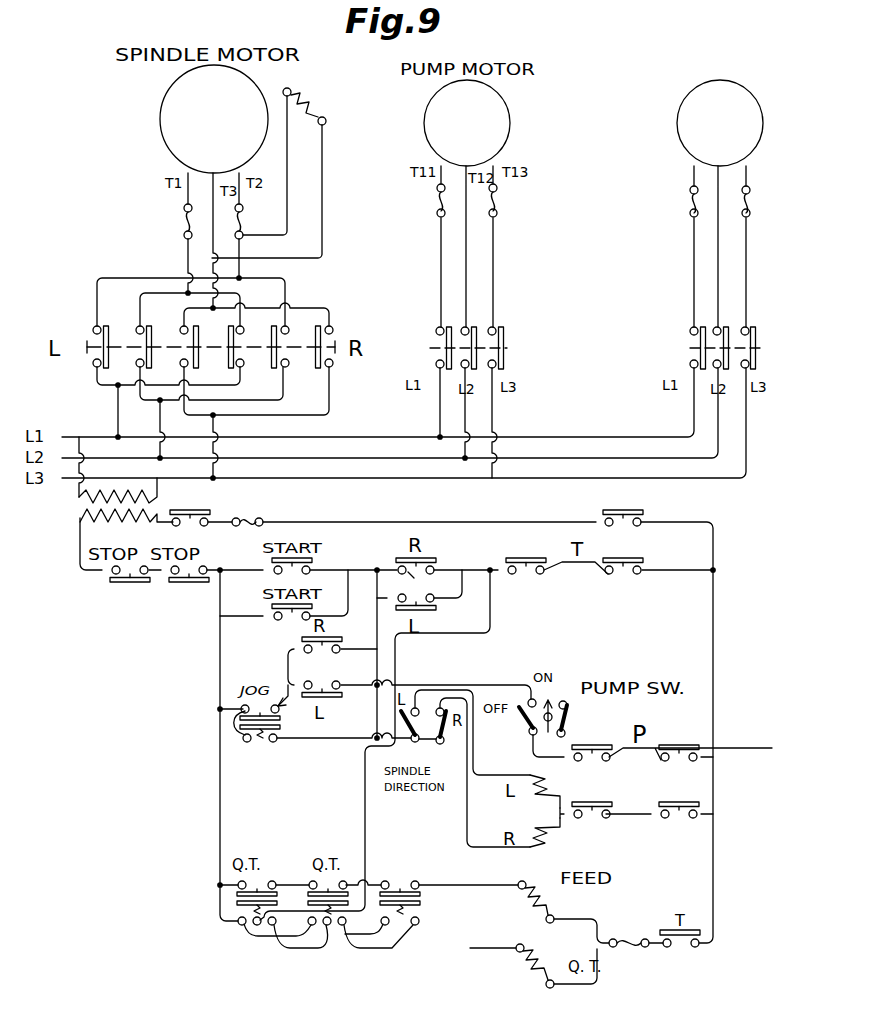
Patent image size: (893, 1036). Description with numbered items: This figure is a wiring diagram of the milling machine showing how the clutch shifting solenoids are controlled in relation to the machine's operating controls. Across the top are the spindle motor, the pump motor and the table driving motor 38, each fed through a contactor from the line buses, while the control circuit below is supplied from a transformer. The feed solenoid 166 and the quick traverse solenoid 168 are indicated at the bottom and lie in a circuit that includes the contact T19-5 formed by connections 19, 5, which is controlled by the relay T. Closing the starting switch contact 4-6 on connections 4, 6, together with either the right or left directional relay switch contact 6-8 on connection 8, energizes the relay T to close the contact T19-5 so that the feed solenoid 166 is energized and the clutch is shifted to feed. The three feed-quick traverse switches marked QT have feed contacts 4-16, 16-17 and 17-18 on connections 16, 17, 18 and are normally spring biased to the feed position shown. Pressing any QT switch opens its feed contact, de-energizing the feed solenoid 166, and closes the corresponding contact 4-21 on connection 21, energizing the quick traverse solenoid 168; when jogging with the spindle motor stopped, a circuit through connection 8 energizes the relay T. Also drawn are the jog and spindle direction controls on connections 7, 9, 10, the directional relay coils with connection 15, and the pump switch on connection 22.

The table driving motor 38 is at (712, 193).
The feed solenoid 166 is at (524, 905).
The quick traverse solenoid 168 is at (524, 973).
The control connection 4 is at (292, 747).
The control connection 5 is at (677, 745).
The control connection 6 is at (404, 658).
The control wire 7 is at (286, 669).
The control connection 8 is at (379, 735).
The control wire 9 is at (487, 749).
The control wire 10 is at (500, 775).
The control wire 15 is at (569, 812).
The control connection 16 is at (266, 891).
The control connection 17 is at (336, 890).
The control connection 18 is at (468, 876).
The control connection 19 is at (608, 953).
The control connection 21 is at (396, 926).
The control wire 22 is at (537, 746).